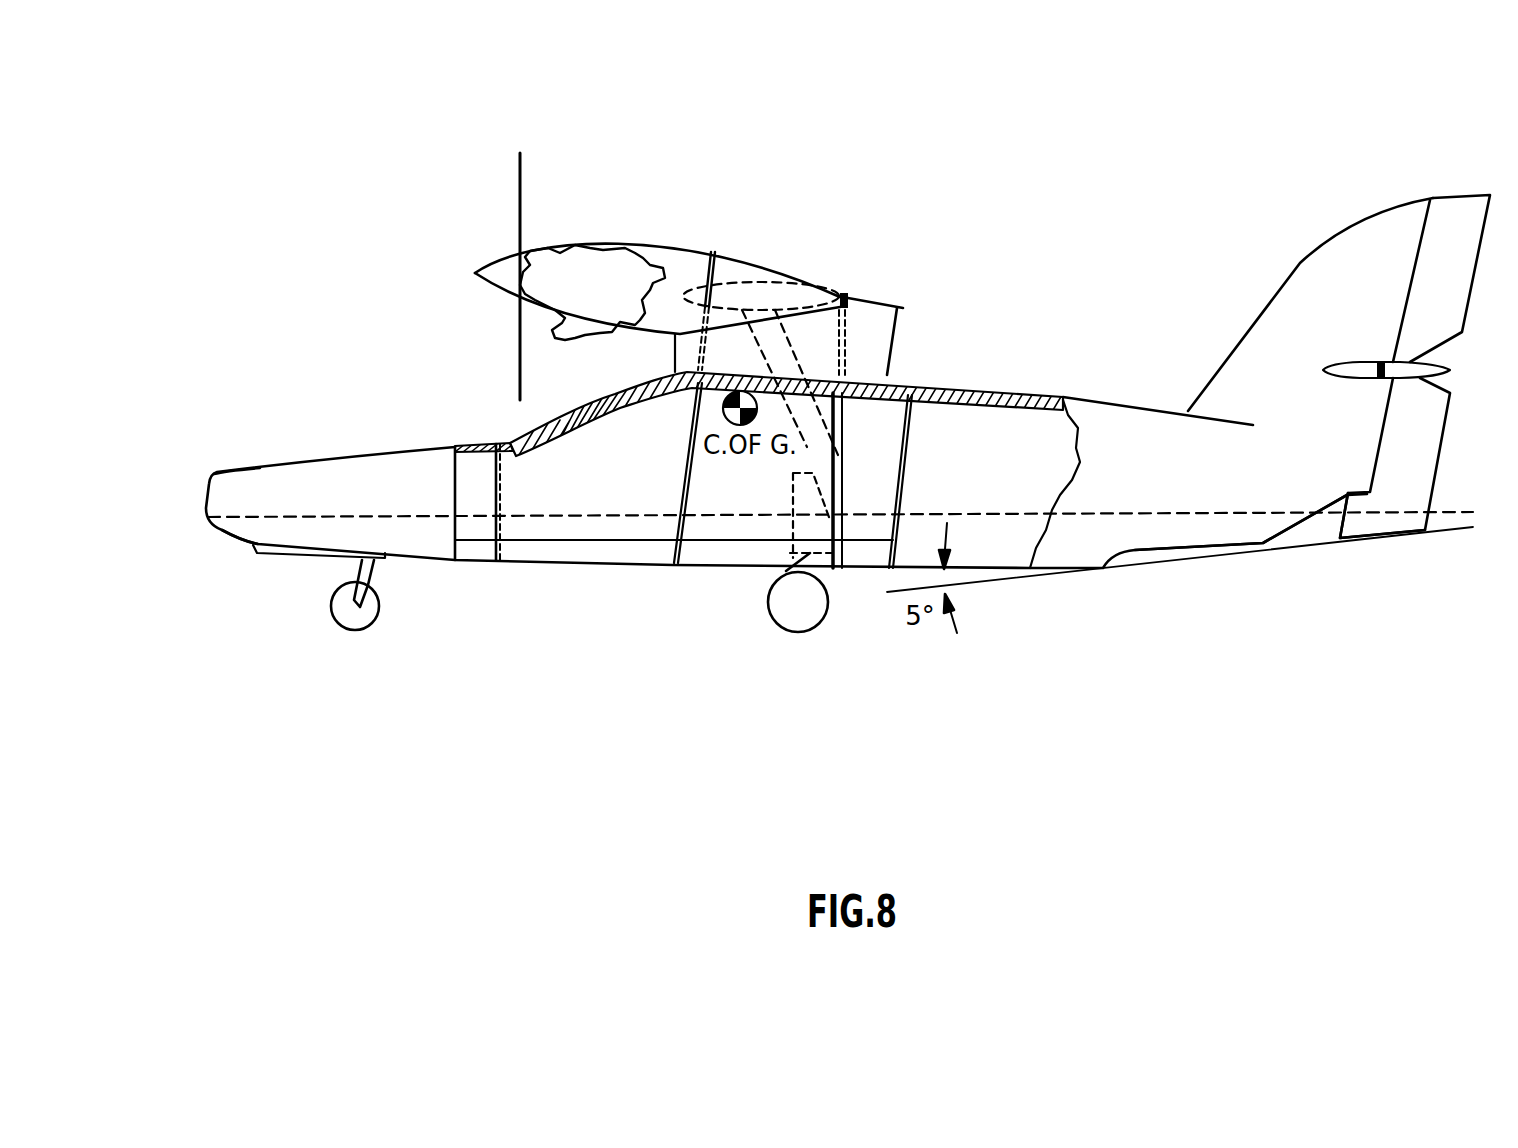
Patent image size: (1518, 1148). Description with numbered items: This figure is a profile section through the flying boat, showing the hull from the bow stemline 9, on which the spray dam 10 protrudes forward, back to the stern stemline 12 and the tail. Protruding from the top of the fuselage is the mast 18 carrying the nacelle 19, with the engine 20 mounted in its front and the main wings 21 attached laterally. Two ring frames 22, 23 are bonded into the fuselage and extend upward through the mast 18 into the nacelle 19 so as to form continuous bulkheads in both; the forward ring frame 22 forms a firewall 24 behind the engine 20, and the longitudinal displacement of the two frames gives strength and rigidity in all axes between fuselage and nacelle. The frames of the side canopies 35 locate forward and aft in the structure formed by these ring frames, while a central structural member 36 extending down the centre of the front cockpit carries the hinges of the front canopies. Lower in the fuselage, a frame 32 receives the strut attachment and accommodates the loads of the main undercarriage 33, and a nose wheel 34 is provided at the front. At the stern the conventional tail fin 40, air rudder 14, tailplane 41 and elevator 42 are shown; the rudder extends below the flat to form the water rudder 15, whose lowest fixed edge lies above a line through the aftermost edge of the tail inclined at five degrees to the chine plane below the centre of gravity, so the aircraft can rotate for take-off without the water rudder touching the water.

The bow stemline 9 is at (208, 525).
The spray dam 10 is at (208, 517).
The stern stemline 12 is at (1283, 533).
The air rudder 14 is at (1455, 213).
The water rudder 15 is at (1372, 523).
The mast 18 is at (683, 340).
The nacelle 19 is at (688, 248).
The engine 20 is at (575, 267).
The main wings 21 is at (793, 297).
The forward ring frame 22 is at (673, 562).
The aft ring frame 23 is at (845, 293).
The firewall 24 is at (717, 297).
The frame 32 is at (823, 577).
The main undercarriage 33 is at (807, 560).
The nose wheel 34 is at (368, 612).
The side canopies 35 is at (887, 375).
The central structural member 36 is at (580, 395).
The tail fin 40 is at (1293, 355).
The tailplane 41 is at (1360, 370).
The elevator 42 is at (1400, 368).